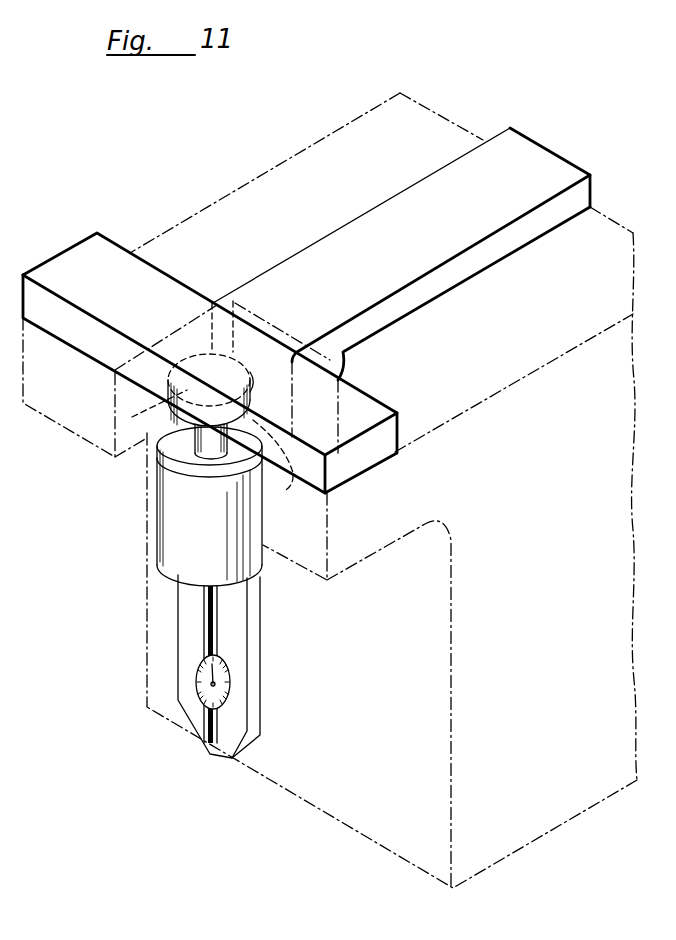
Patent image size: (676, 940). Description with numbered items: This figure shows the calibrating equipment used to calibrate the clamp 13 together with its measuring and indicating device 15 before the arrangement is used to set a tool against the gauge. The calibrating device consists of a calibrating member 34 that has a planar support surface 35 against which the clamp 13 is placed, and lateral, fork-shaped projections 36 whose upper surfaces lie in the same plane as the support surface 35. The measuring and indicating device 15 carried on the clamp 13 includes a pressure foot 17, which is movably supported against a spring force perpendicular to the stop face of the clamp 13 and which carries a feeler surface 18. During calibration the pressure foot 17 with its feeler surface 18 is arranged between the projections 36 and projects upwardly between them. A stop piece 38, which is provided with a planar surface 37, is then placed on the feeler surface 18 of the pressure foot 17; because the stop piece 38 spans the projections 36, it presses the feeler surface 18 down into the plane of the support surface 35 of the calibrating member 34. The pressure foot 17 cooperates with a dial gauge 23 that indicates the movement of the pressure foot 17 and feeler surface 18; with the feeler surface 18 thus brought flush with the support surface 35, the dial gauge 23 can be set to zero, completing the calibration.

The clamp 13 is at (295, 272).
The measuring and indicating device 15 is at (276, 655).
The pressure foot 17 is at (213, 447).
The feeler surface 18 is at (192, 393).
The dial gauge 23 is at (226, 703).
The calibrating member 34 is at (540, 817).
The support surface 35 is at (456, 414).
The fork-shaped projections 36 is at (64, 394).
The planar surface 37 is at (350, 481).
The stop piece 38 is at (88, 258).